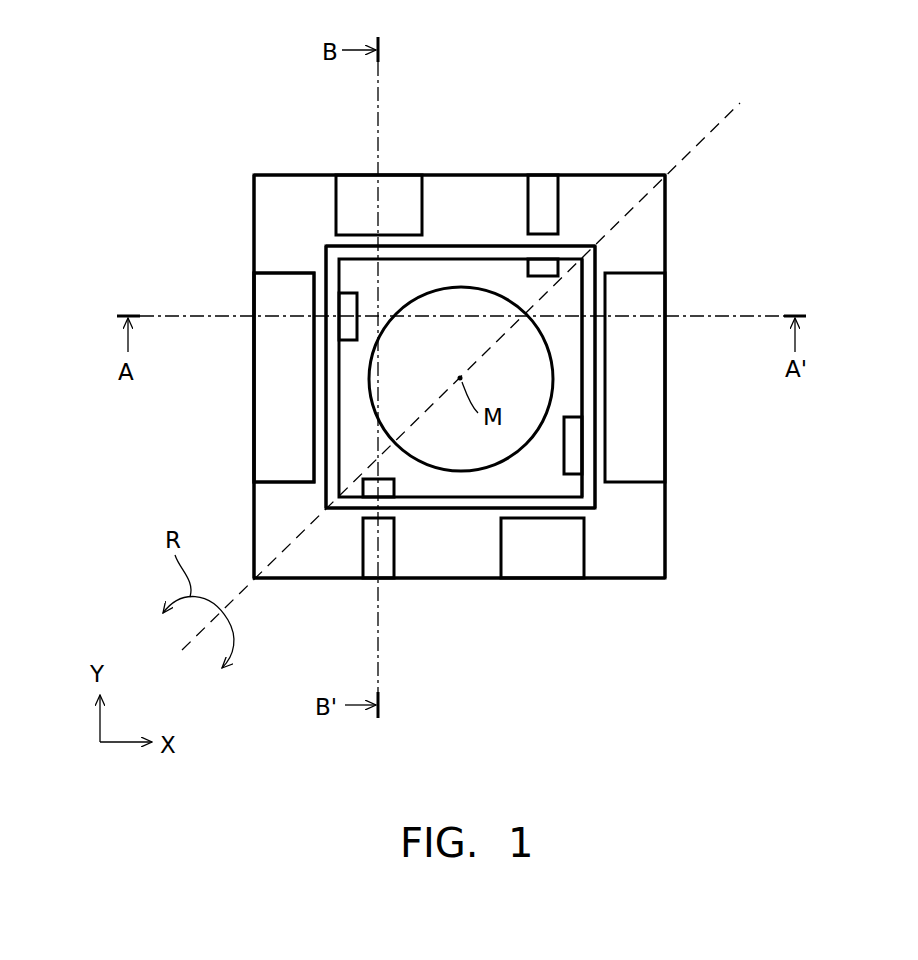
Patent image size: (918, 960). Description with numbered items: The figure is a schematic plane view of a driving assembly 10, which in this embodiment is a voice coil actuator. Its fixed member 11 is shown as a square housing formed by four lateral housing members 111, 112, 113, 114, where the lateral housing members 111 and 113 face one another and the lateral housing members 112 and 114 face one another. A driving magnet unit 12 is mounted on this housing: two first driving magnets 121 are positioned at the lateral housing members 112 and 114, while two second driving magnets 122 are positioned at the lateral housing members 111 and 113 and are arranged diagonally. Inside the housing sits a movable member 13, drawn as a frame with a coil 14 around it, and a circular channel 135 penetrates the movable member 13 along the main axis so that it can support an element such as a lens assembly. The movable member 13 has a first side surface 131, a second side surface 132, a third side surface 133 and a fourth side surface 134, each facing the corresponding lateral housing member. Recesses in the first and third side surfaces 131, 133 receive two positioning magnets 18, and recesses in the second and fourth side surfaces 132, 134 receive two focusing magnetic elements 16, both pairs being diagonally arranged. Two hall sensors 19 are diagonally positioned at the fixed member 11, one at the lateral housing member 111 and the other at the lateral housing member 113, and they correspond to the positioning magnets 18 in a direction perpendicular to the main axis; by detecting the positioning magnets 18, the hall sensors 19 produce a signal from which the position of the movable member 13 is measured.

The driving assembly 10 is at (178, 72).
The fixed member 11 is at (252, 173).
The lateral housing member 111 is at (641, 175).
The lateral housing member 112 is at (254, 198).
The lateral housing member 113 is at (643, 578).
The lateral housing member 114 is at (666, 192).
The driving magnet unit 12 is at (270, 447).
The first driving magnet 121 is at (270, 405).
The second driving magnet 122 is at (347, 185).
The movable member 13 is at (448, 483).
The first side surface 131 is at (485, 253).
The second side surface 132 is at (335, 370).
The third side surface 133 is at (557, 498).
The fourth side surface 134 is at (585, 372).
The channel 135 is at (502, 443).
The coil 14 is at (590, 340).
The focusing magnetic element 16 is at (348, 322).
The positioning magnet 18 is at (543, 270).
The hall sensor 19 is at (543, 185).